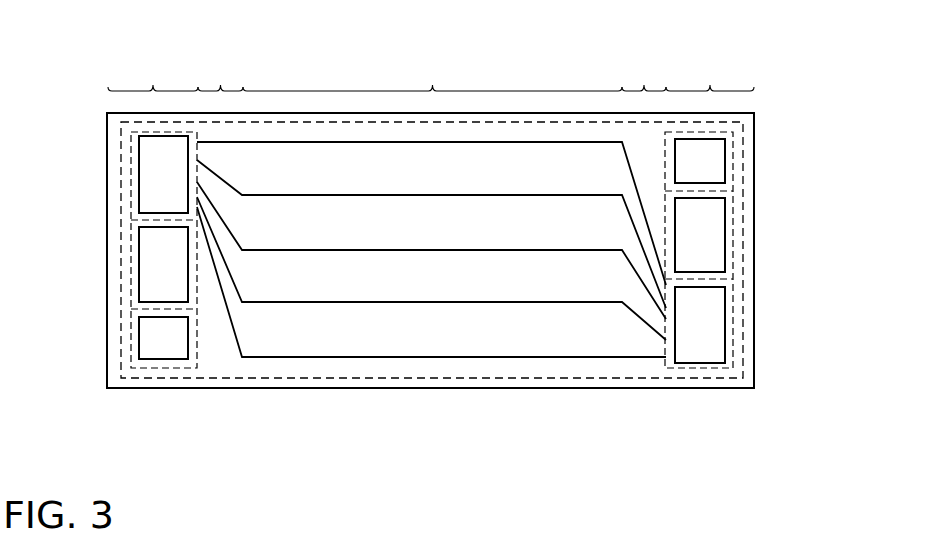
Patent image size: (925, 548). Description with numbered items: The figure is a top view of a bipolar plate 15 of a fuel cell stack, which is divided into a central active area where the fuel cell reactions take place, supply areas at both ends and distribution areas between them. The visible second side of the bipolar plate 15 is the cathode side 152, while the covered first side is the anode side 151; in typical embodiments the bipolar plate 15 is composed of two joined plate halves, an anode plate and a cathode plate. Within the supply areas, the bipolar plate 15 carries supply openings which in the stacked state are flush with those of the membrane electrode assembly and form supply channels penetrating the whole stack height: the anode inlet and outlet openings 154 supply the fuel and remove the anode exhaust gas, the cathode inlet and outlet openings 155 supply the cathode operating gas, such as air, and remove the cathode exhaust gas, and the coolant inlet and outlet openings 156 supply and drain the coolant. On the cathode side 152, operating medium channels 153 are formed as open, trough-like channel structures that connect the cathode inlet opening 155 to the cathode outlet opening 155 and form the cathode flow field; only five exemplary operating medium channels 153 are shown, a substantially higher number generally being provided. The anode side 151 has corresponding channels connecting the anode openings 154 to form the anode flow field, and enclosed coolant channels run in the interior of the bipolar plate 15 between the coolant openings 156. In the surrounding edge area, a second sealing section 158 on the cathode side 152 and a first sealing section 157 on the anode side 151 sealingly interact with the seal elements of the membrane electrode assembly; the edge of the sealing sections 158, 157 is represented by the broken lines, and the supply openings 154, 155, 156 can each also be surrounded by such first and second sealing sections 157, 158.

The bipolar plate 15 is at (515, 62).
The anode side 151 is at (276, 415).
The cathode side 152 is at (443, 181).
The operating medium channels 153 is at (377, 302).
The anode inlet and outlet openings 154 is at (138, 340).
The cathode inlet and outlet openings 155 is at (138, 174).
The coolant inlet and outlet openings 156 is at (138, 266).
The first sealing section 157 is at (501, 285).
The second sealing section 158 is at (462, 384).